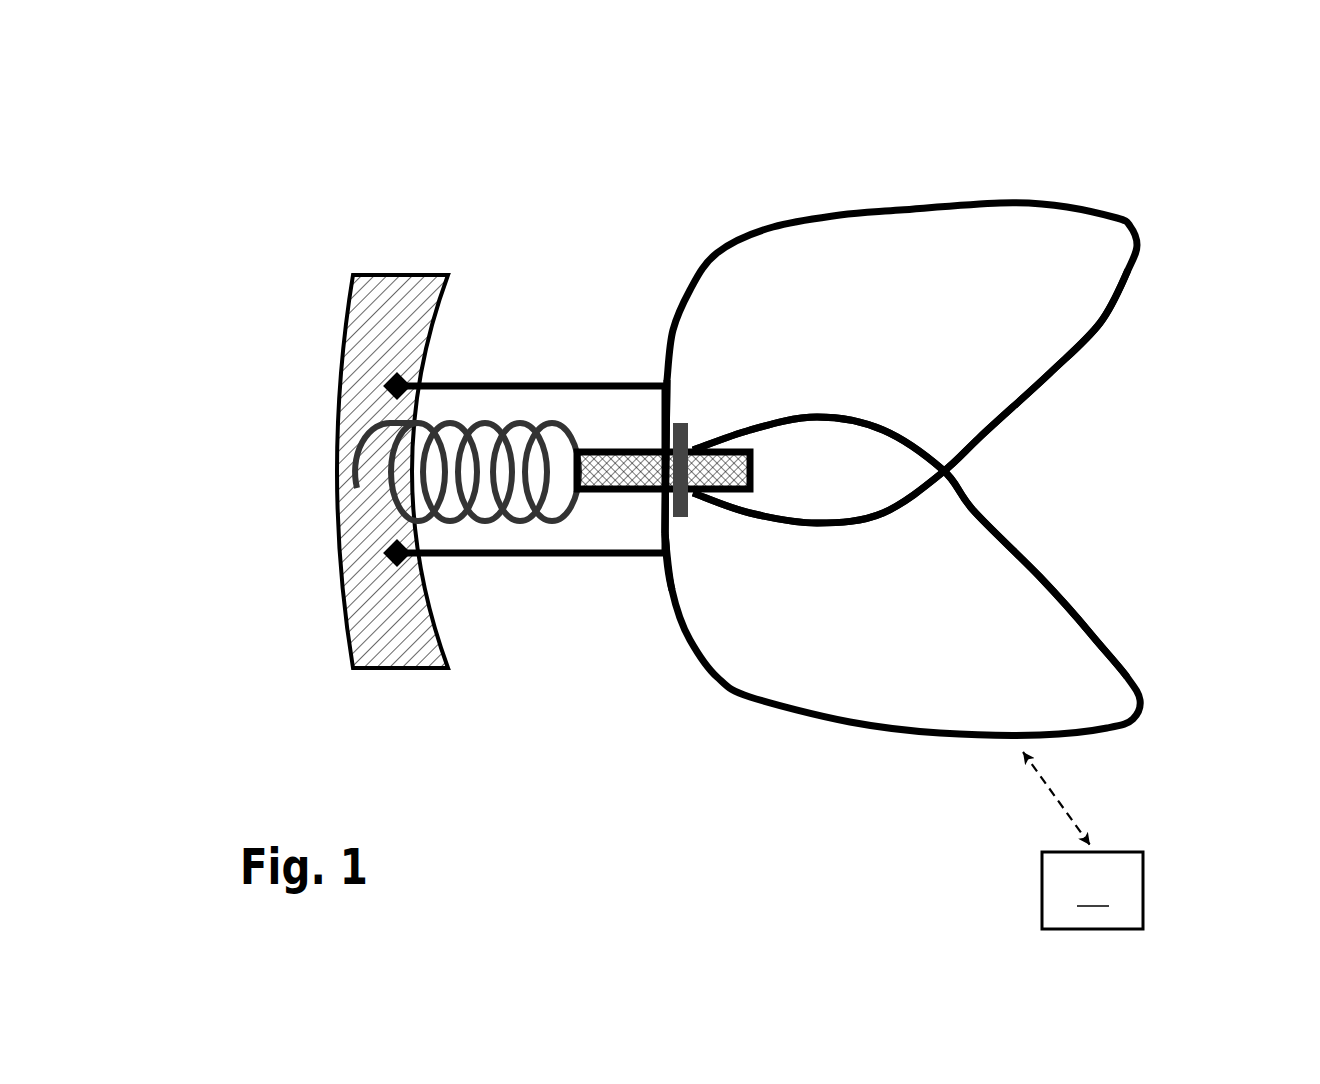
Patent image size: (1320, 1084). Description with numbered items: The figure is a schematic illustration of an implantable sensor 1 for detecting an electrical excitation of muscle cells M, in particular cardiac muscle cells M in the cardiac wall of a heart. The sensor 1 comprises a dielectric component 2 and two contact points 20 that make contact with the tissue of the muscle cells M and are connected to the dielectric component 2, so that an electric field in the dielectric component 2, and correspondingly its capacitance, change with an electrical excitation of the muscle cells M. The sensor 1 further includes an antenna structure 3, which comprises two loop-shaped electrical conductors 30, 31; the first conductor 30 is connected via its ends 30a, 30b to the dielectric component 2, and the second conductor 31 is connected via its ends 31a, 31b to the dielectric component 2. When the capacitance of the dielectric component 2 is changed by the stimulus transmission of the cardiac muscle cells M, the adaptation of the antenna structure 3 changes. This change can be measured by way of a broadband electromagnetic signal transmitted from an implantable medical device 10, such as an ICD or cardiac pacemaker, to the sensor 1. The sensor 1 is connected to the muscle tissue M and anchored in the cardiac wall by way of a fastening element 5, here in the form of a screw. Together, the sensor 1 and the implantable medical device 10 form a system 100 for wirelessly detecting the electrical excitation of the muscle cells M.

The implantable sensor 1 is at (572, 586).
The dielectric component 2 is at (628, 440).
The antenna structure 3 is at (987, 201).
The fastening element 5 is at (350, 472).
The implantable medical device 10 is at (1092, 890).
The contact point 20 is at (379, 555).
The loop-shaped electrical conductor 30 is at (1047, 393).
The end of loop-shaped electrical conductor 30a is at (677, 362).
The end of loop-shaped electrical conductor 30b is at (722, 505).
The loop-shaped electrical conductor 31 is at (1081, 591).
The end of loop-shaped electrical conductor 31a is at (710, 438).
The end of loop-shaped electrical conductor 31b is at (665, 583).
The system 100 is at (1137, 817).
The muscle cells M is at (402, 293).